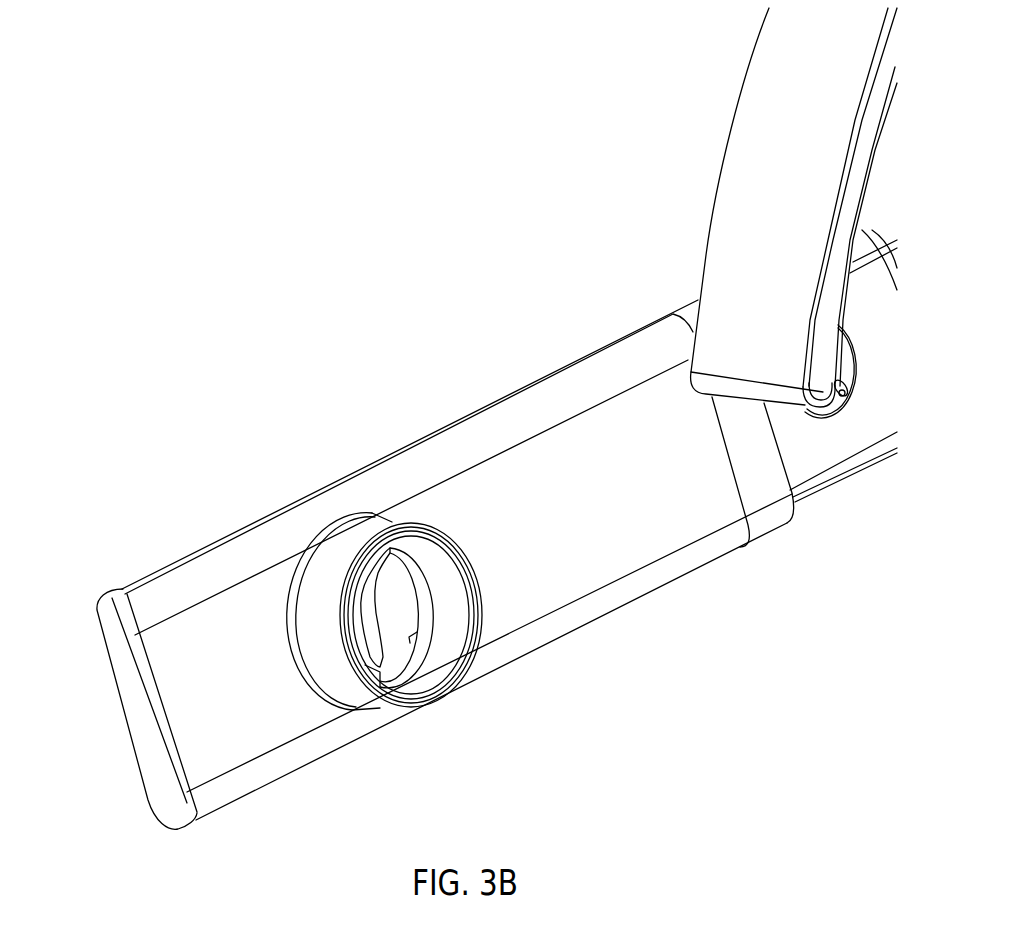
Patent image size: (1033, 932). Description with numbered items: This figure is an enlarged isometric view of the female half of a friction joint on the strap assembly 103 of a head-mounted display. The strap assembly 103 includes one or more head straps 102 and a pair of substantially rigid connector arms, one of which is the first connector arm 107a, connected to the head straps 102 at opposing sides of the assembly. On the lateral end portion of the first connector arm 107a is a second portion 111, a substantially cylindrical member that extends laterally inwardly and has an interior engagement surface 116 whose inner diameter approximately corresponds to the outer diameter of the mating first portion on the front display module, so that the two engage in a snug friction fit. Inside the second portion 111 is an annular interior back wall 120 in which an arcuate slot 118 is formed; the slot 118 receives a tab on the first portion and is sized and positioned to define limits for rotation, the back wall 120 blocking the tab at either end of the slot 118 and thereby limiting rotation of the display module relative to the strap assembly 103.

The head strap 102 is at (722, 150).
The strap assembly 103 is at (618, 350).
The first connector arm 107a is at (472, 428).
The second portion 111 is at (365, 536).
The interior engagement surface 116 is at (437, 600).
The annular interior back wall 120 is at (418, 623).
The arcuate slot 118 is at (401, 657).